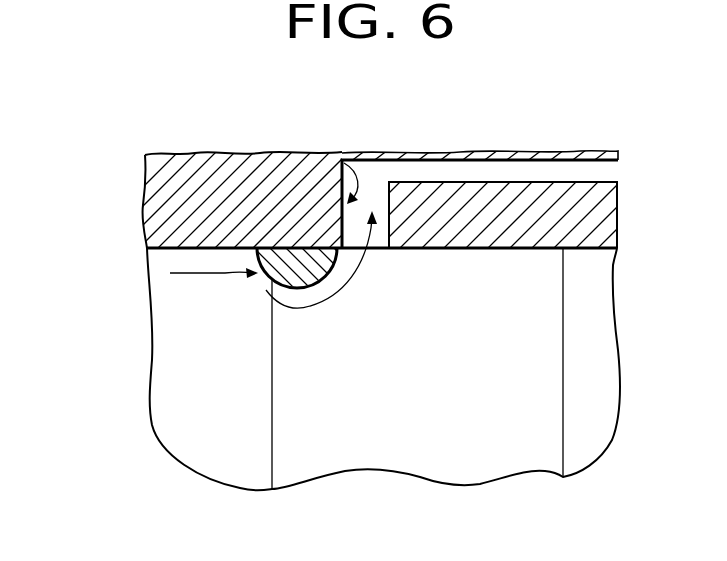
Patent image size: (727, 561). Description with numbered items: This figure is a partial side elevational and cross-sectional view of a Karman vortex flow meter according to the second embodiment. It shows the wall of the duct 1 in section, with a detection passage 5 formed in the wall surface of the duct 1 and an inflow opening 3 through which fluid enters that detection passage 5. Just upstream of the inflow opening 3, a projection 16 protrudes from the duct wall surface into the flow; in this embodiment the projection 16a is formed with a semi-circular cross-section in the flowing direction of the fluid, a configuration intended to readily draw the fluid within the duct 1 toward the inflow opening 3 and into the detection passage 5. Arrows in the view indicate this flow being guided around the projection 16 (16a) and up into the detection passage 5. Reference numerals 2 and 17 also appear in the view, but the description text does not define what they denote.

The duct 1 is at (178, 248).
The cylinder block 2 is at (564, 427).
The inflow opening 3 is at (390, 250).
The detection passage 5 is at (338, 159).
The projection 16 is at (209, 310).
The projection with semi-circular cross section 16a is at (255, 275).
The coolant passage 17 is at (215, 273).